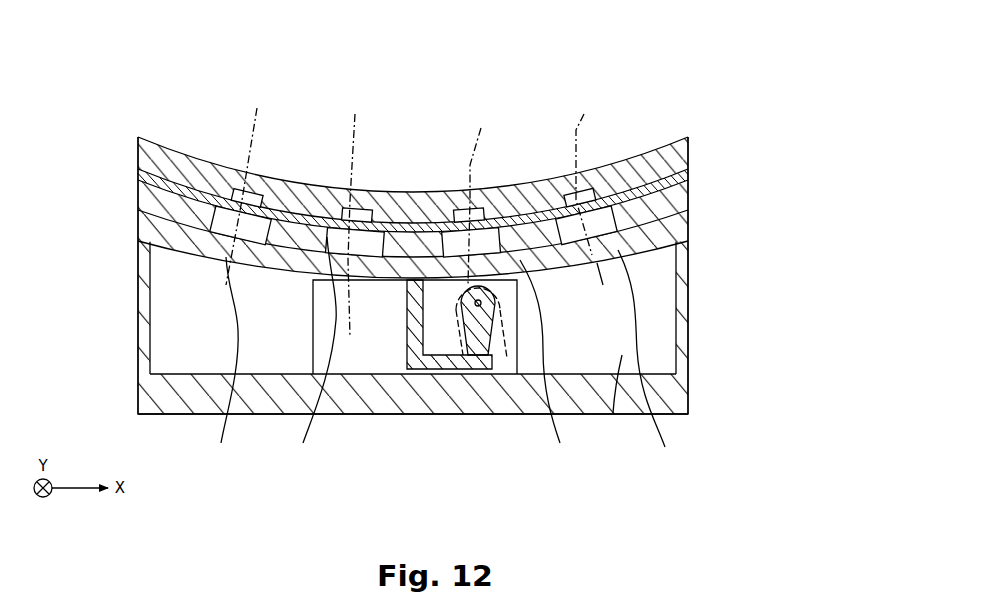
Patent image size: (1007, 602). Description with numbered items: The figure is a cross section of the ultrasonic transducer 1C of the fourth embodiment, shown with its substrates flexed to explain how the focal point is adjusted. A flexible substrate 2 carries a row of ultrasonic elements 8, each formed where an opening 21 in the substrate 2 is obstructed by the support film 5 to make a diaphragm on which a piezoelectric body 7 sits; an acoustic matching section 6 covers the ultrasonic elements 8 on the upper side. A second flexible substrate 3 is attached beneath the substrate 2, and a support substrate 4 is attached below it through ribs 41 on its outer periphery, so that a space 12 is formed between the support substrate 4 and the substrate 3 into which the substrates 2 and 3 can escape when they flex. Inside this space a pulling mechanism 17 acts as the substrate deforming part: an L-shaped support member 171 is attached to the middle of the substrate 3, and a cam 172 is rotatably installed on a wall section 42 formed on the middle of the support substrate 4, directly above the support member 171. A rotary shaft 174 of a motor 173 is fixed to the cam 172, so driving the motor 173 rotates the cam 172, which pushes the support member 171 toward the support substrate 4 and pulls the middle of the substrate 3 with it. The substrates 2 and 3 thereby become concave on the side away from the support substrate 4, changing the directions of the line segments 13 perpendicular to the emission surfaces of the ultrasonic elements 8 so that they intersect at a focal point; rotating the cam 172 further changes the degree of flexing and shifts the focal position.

The ultrasonic transducer 1C is at (633, 72).
The substrate 2 is at (688, 200).
The substrate 3 is at (690, 230).
The support substrate 4 is at (589, 394).
The support film 5 is at (690, 178).
The acoustic matching section 6 is at (678, 160).
The piezoelectric body 7 is at (243, 191).
The ultrasonic element 8 is at (257, 192).
The space 12 is at (619, 396).
The line segment 13 is at (410, 213).
The pulling mechanism 17 is at (451, 373).
The opening 21 is at (440, 352).
The rib 41 is at (682, 312).
The wall section 42 is at (370, 338).
The support member 171 is at (397, 333).
The cam 172 is at (468, 332).
The motor 173 is at (505, 350).
The rotary shaft 174 is at (478, 307).